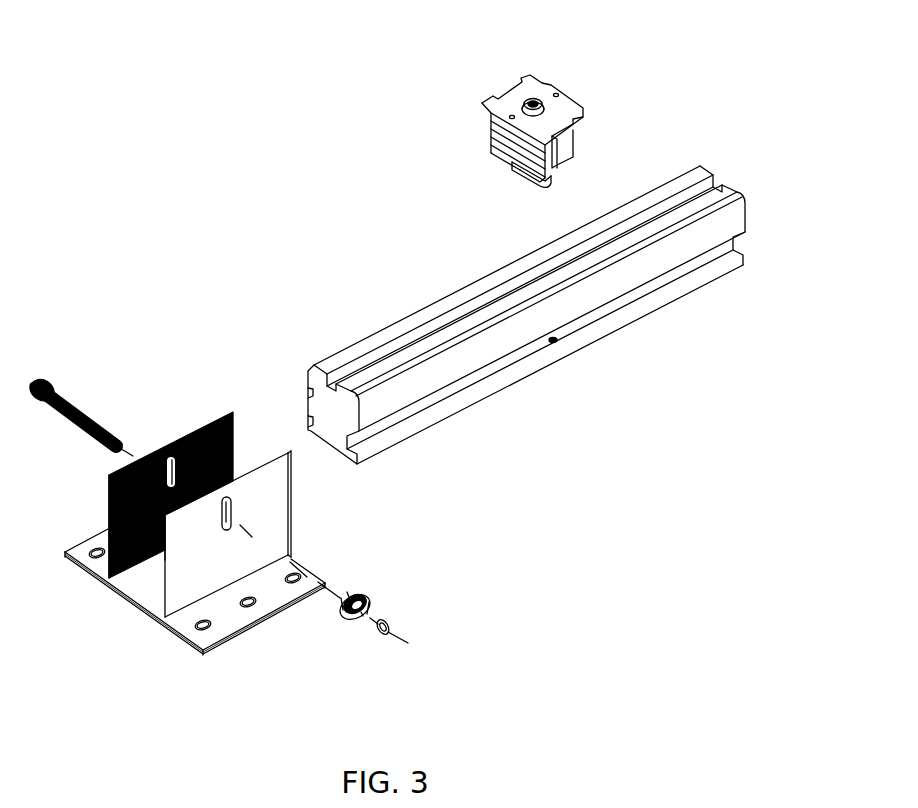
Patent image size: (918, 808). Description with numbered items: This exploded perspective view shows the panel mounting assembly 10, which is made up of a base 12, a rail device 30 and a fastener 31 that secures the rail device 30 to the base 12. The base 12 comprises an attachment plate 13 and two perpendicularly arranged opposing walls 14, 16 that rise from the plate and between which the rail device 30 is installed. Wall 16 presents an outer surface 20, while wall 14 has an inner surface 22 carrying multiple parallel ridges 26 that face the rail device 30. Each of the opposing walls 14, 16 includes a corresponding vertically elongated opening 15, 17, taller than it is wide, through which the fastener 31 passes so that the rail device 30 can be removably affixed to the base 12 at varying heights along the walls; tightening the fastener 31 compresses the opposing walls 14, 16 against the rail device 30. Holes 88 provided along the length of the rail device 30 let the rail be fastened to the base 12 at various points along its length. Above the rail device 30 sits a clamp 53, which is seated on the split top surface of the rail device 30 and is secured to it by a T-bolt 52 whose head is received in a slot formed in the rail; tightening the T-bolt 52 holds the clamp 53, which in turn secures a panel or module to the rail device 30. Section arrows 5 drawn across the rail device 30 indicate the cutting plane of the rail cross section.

The section line 5- 5 is at (312, 273).
The assembly 10 is at (121, 259).
The base 12 is at (183, 584).
The attachment plate 13 is at (231, 620).
The opposing wall 14 is at (213, 418).
The vertically elongated opening 15 is at (224, 517).
The opposing wall 16 is at (273, 522).
The vertically elongated opening 17 is at (168, 455).
The outer surface 20 is at (273, 487).
The inner surface 22 is at (108, 527).
The parallel ridges 26 is at (108, 500).
The rail device 30 is at (699, 292).
The fastener 31 is at (62, 398).
The T-bolt 52 is at (522, 173).
The clamp 53 is at (545, 78).
The holes 88 is at (557, 342).